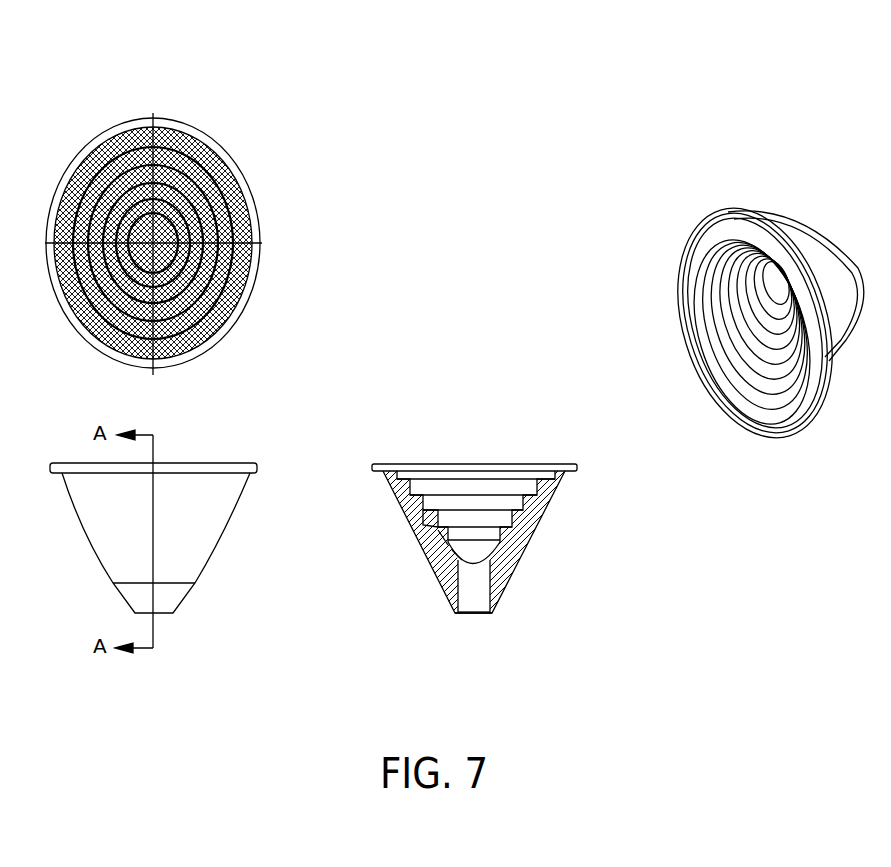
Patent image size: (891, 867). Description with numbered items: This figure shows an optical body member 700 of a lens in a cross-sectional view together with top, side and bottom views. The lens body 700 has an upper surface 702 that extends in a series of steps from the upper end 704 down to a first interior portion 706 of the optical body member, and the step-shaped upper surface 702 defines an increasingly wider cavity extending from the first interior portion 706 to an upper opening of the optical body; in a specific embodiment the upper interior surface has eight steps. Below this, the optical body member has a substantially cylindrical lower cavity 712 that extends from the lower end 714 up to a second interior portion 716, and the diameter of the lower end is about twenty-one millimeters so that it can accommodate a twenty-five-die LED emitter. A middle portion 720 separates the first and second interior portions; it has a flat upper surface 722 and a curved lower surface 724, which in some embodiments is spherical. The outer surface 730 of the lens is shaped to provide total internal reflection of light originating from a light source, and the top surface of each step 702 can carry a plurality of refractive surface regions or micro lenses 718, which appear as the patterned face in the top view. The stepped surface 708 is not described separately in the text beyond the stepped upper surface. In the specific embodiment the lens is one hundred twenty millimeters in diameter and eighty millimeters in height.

The optical body member 700 is at (480, 120).
The upper surface 702 is at (533, 492).
The upper end 704 is at (550, 465).
The first interior portion 706 is at (478, 532).
The stepped reflective surface 708 is at (495, 495).
The lower cavity 712 is at (467, 582).
The lower end 714 is at (457, 615).
The second interior portion 716 is at (473, 568).
The micro lenses 718 is at (240, 178).
The middle portion 720 is at (447, 547).
The flat upper surface 722 is at (465, 537).
The curved lower surface 724 is at (460, 555).
The outer surface 730 is at (538, 550).